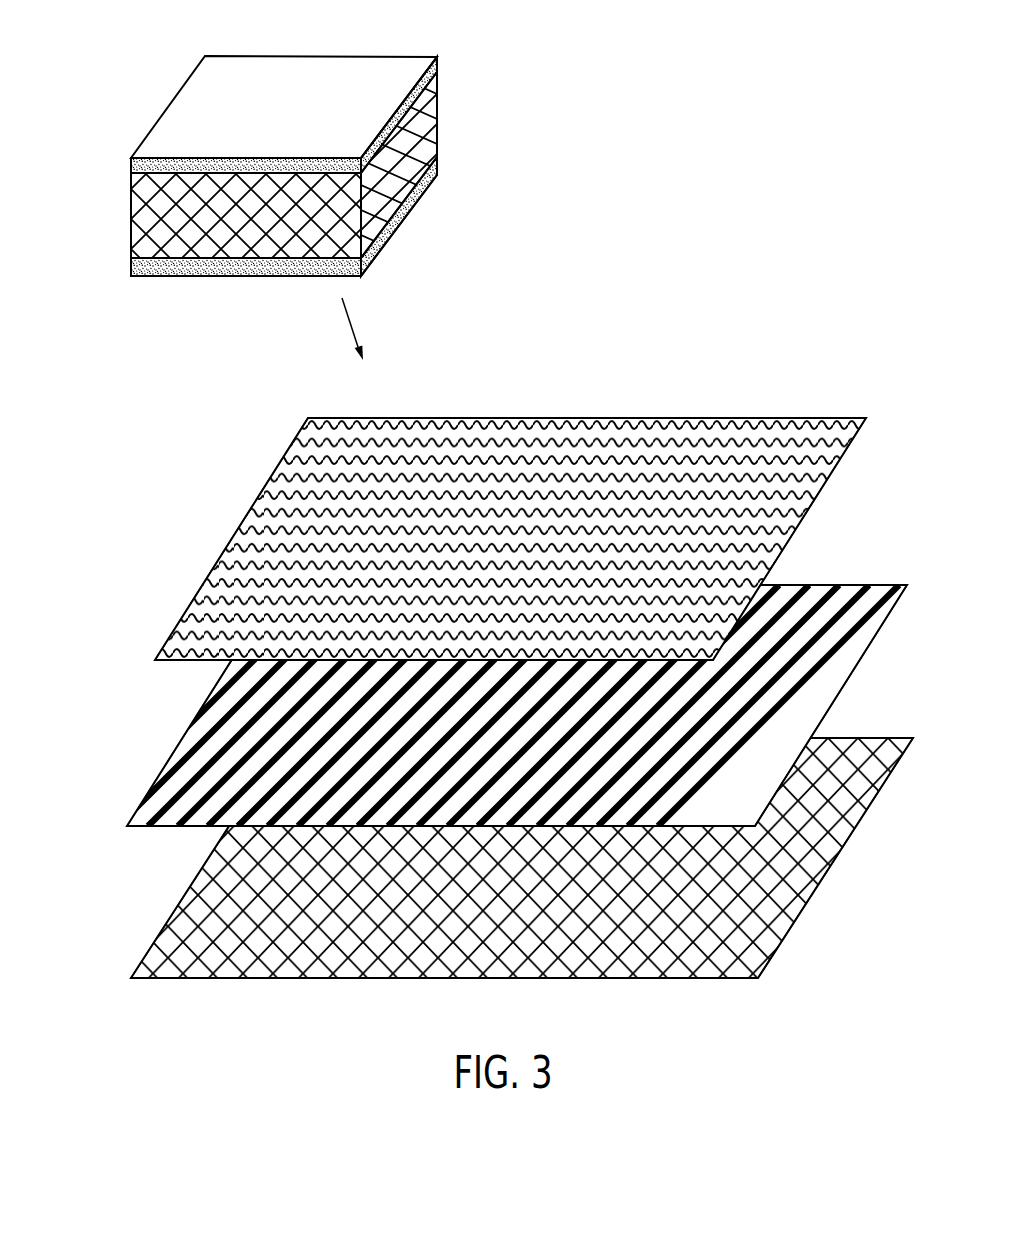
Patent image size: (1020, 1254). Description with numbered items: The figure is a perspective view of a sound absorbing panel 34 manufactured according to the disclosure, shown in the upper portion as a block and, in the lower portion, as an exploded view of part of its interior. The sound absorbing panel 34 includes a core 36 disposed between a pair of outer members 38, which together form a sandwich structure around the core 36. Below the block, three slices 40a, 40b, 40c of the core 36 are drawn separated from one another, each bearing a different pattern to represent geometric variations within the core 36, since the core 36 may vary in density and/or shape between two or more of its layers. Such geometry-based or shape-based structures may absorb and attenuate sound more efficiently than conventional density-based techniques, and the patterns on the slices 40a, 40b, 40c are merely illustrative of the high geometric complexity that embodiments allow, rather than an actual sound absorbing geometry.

The sound absorbing panel 34 is at (298, 148).
The core 36 is at (424, 143).
The outer members 38 is at (142, 164).
The first slice 40a is at (817, 435).
The second slice 40b is at (845, 597).
The third slice 40c is at (873, 750).